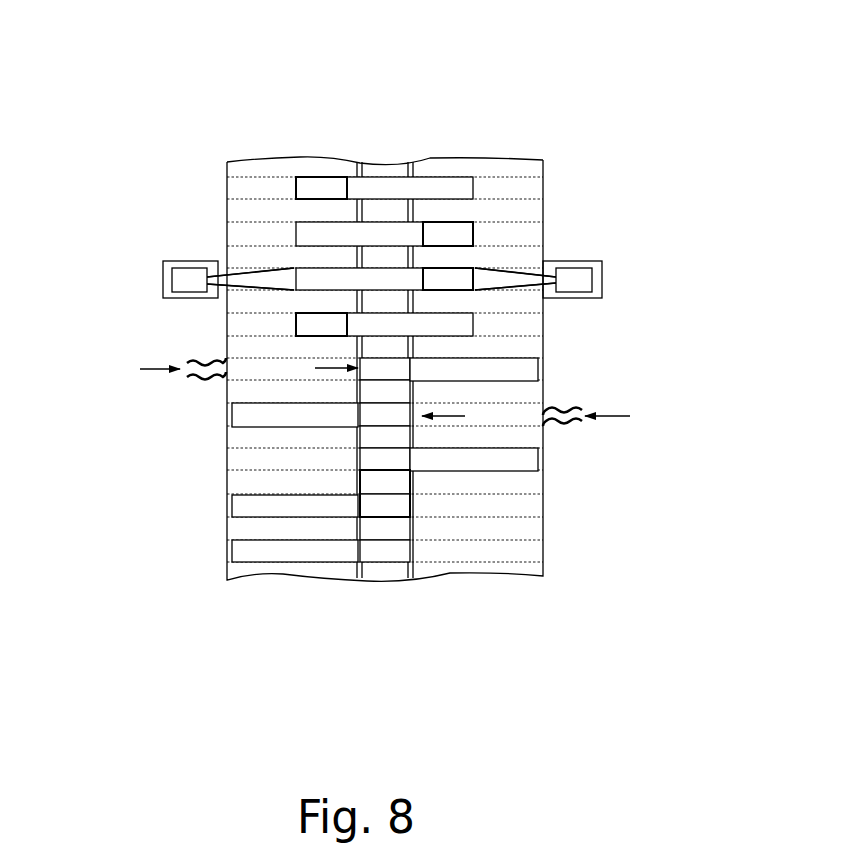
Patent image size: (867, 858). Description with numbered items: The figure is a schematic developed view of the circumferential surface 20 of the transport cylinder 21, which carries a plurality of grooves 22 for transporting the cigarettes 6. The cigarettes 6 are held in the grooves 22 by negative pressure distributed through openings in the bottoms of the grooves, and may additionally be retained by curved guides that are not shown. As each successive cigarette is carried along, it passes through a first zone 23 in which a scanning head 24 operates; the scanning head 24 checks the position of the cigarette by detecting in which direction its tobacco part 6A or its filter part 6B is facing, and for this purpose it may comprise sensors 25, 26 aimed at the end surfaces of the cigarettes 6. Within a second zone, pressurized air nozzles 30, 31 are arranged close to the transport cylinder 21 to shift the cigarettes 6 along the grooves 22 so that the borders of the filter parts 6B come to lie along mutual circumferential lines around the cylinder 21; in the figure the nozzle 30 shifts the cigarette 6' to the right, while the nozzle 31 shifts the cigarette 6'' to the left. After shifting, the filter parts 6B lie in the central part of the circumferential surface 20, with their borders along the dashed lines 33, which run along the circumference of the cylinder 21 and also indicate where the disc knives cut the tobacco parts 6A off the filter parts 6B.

The cigarette 6 is at (384, 200).
The cigarette 6' is at (556, 369).
The cigarette 6'' is at (234, 458).
The tobacco part 6A is at (297, 555).
The filter part 6B is at (359, 388).
The circumferential surface 20 is at (543, 255).
The transport cylinder 21 is at (468, 132).
The groove 22 is at (517, 185).
The first zone 23 is at (212, 262).
The scanning head 24 is at (250, 279).
The sensor 25 is at (173, 275).
The sensor 26 is at (582, 280).
The pressurized air nozzle 30 is at (225, 367).
The pressurized air nozzle 31 is at (567, 410).
The dashed line 33 is at (417, 482).